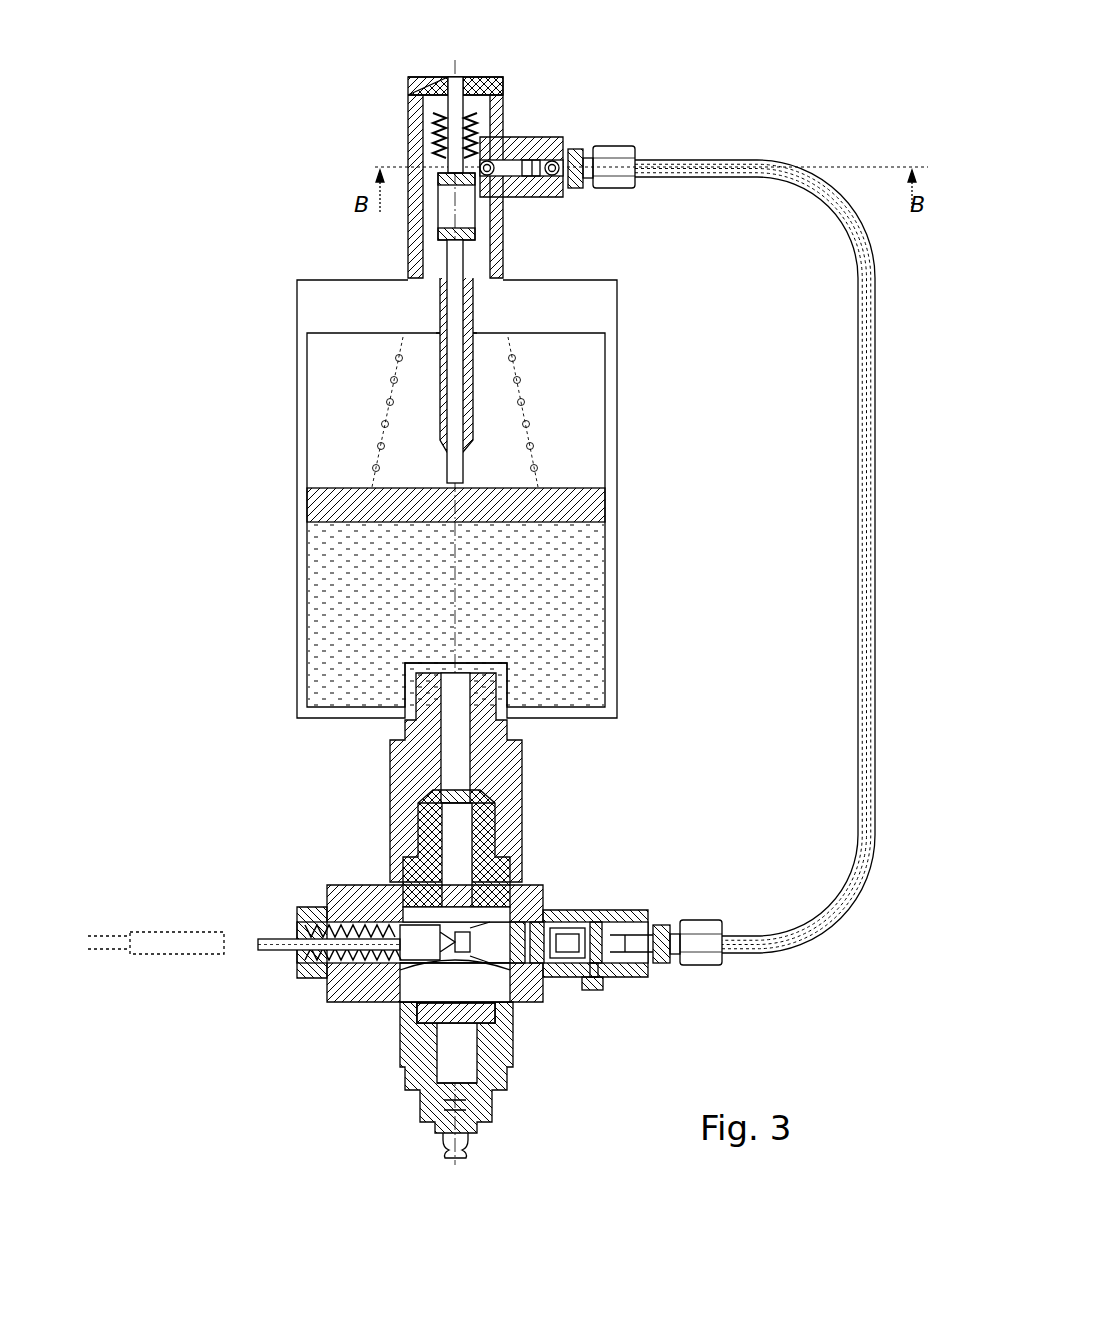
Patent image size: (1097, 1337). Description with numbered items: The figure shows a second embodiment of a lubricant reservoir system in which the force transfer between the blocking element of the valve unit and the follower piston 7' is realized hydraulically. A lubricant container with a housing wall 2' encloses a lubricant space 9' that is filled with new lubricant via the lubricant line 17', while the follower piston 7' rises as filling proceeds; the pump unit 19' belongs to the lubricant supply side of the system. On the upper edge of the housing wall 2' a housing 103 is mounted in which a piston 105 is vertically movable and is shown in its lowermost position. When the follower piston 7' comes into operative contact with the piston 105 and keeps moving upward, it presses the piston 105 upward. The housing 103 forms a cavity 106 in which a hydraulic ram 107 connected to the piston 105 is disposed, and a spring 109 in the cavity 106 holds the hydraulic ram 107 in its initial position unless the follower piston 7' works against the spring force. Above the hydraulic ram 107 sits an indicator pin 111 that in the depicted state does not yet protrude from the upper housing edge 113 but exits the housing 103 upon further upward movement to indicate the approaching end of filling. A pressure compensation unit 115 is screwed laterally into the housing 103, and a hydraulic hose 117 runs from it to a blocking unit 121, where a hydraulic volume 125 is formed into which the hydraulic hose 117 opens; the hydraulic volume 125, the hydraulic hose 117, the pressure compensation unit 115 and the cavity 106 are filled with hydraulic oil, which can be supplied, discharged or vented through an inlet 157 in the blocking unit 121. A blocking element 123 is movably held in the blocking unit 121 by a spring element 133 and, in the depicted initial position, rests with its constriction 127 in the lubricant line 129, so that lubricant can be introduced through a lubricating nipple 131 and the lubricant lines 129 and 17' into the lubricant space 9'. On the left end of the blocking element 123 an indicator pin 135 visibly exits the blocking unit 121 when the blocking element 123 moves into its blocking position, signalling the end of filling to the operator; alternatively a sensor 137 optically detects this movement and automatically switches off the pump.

The housing wall 2' is at (413, 499).
The follower piston 7' is at (502, 496).
The lubricant space 9' is at (456, 614).
The lubricant line 17' is at (508, 817).
The pump unit 19' is at (409, 777).
The housing 103 is at (502, 268).
The piston 105 is at (455, 372).
The cavity 106 is at (472, 148).
The hydraulic ram 107 is at (445, 220).
The spring 109 is at (437, 158).
The indicator pin 111 is at (452, 88).
The upper housing edge 113 is at (487, 83).
The pressure compensation unit 115 is at (566, 140).
The hydraulic hose 117 is at (862, 333).
The blocking unit 121 is at (662, 905).
The blocking element 123 is at (485, 952).
The hydraulic volume 125 is at (572, 930).
The constriction 127 is at (465, 918).
The lubricant line 129 is at (445, 1005).
The lubricating nipple 131 is at (463, 1138).
The spring element 133 is at (312, 920).
The indicator pin 135 is at (272, 945).
The sensor 137 is at (165, 947).
The inlet 157 is at (603, 983).